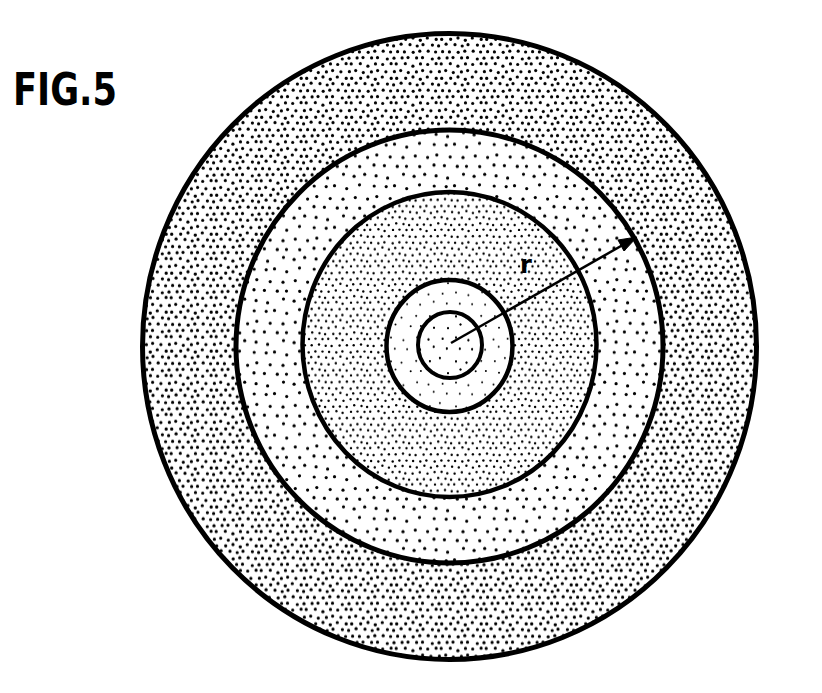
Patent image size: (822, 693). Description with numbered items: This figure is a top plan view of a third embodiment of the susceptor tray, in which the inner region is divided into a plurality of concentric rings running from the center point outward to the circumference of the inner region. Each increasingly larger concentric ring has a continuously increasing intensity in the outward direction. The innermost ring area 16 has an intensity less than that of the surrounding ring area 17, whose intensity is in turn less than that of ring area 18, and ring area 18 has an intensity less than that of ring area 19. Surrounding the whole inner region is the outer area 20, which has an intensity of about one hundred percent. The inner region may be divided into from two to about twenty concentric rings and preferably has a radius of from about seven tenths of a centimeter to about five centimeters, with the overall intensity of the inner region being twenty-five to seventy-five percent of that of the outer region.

The ring area 16 is at (468, 345).
The ring area 17 is at (400, 343).
The ring area 18 is at (466, 253).
The ring area 19 is at (466, 177).
The outer area 20 is at (470, 95).